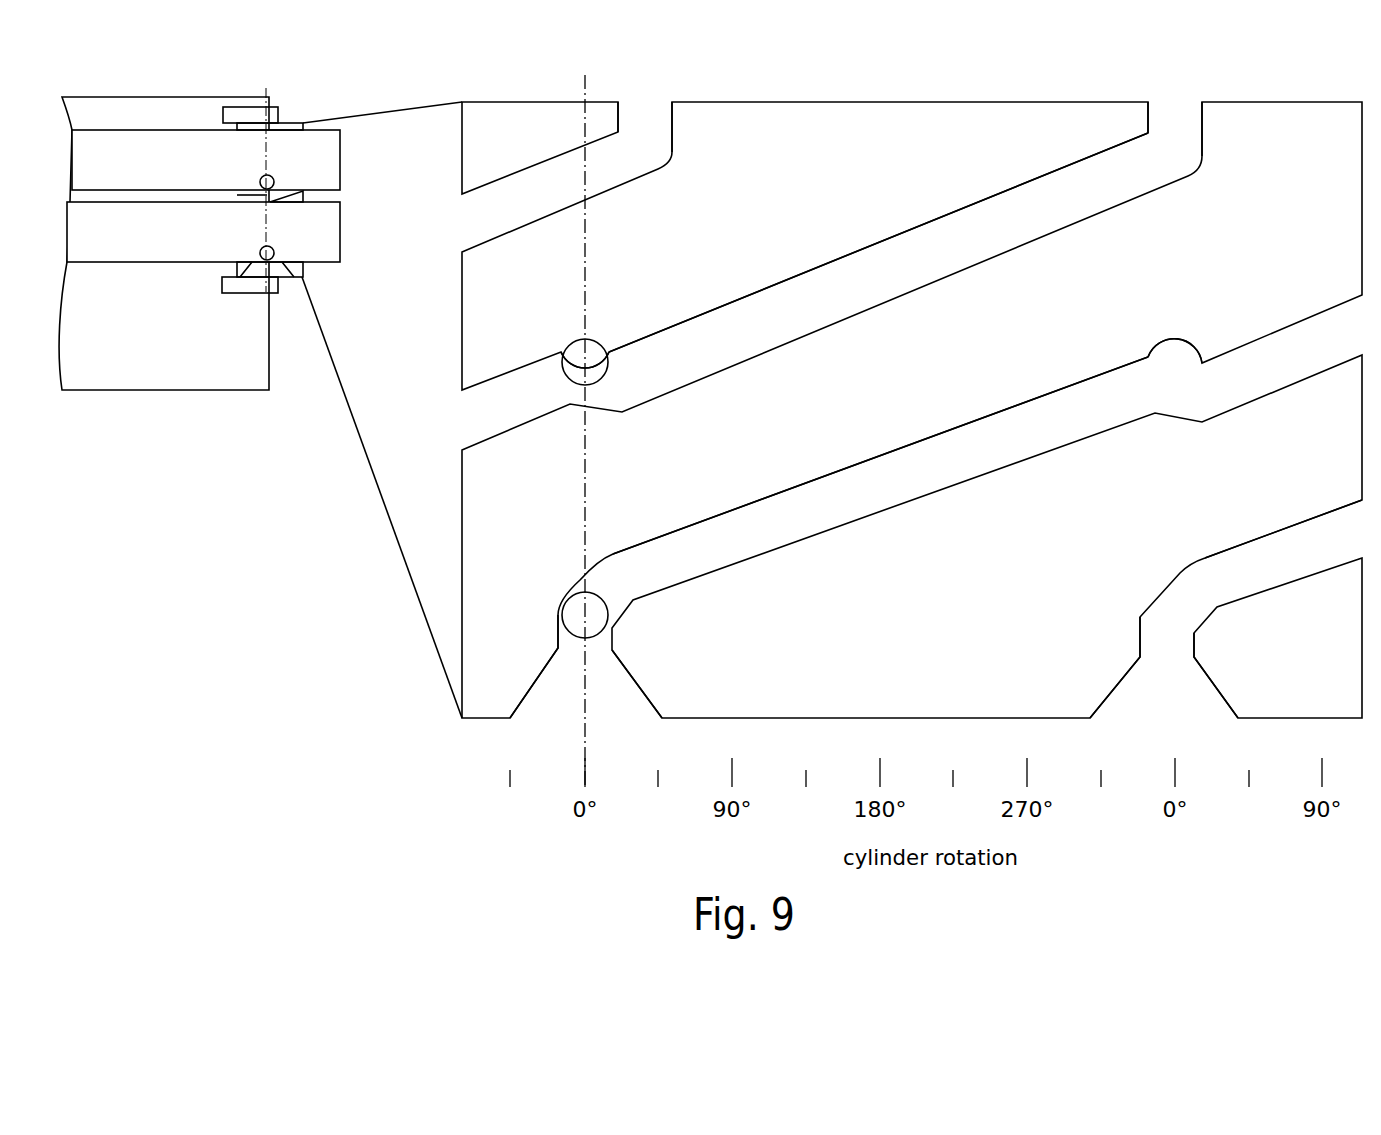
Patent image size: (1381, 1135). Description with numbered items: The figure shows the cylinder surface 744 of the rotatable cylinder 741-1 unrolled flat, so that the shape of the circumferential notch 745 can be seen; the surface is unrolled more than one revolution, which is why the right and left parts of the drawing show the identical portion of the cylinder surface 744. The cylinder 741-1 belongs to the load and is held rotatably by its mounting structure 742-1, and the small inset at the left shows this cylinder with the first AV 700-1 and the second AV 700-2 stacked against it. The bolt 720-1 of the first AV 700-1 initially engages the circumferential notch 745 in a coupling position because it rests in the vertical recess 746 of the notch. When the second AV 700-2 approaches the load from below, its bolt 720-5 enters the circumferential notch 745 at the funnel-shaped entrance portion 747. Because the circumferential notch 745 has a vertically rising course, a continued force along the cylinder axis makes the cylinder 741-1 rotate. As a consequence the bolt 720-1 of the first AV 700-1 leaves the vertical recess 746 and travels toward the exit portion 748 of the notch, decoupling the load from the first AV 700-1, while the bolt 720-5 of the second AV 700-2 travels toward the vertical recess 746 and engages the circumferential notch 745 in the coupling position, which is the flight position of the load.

The first AV 700-1 is at (341, 153).
The second AV 700-2 is at (341, 233).
The rotatable cylinder 741-1 is at (303, 275).
The mounting structure 742-1 is at (278, 293).
The cylinder surface 744 is at (893, 100).
The circumferential notch 745 is at (880, 290).
The vertical recess 746 is at (603, 347).
The entrance portion 747 is at (600, 708).
The exit portion 748 is at (640, 108).
The bolt 720-1 is at (610, 368).
The bolt 720-5 is at (603, 597).